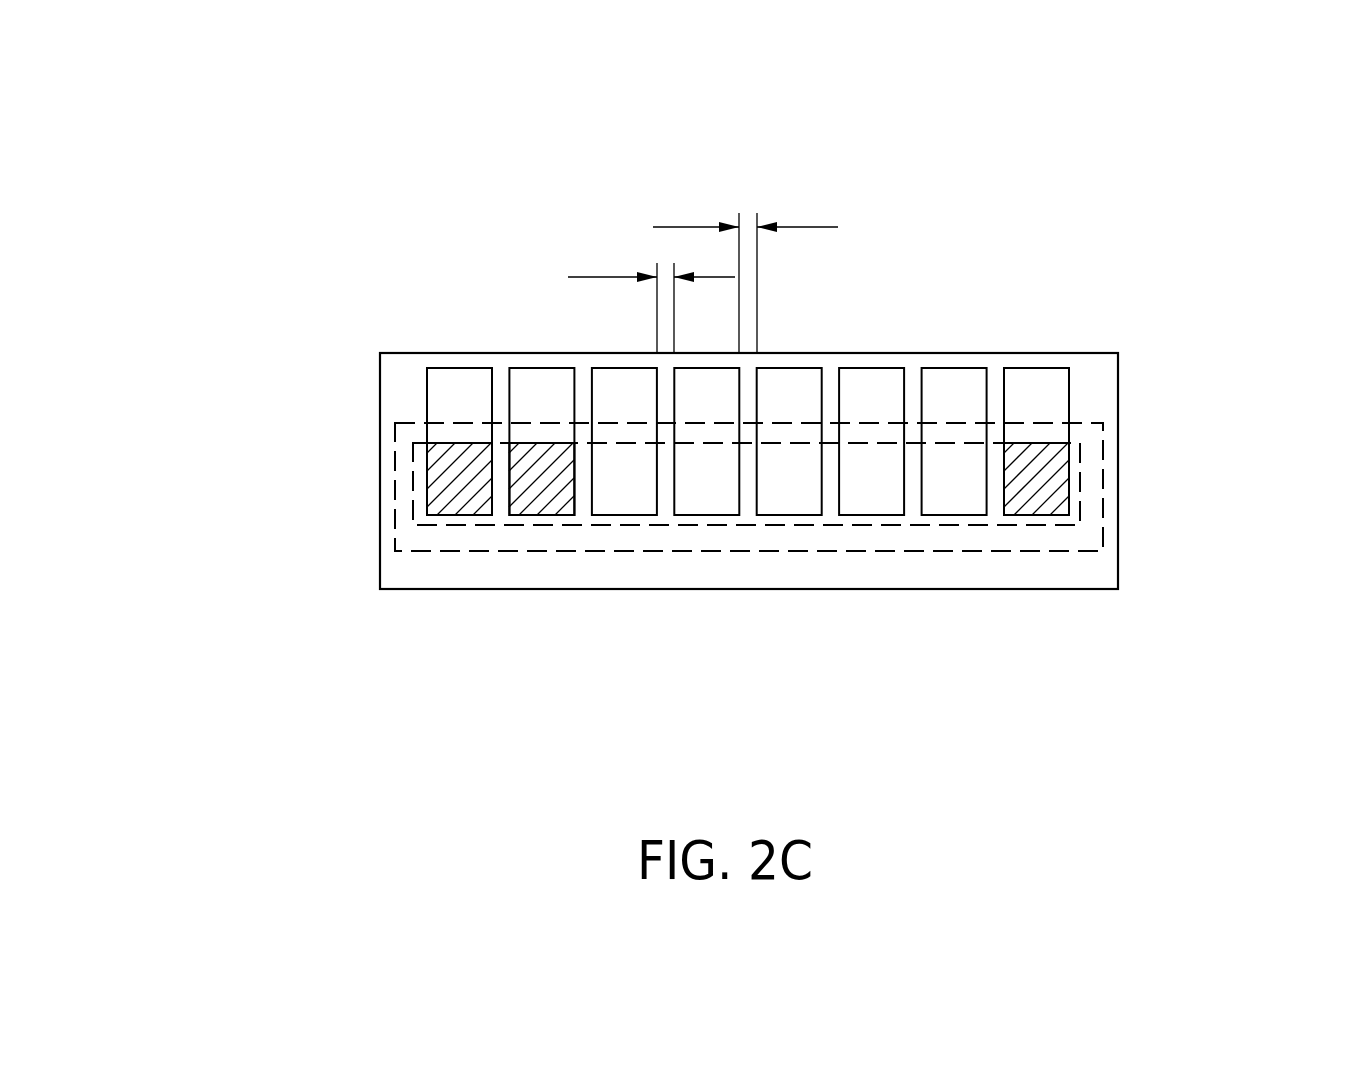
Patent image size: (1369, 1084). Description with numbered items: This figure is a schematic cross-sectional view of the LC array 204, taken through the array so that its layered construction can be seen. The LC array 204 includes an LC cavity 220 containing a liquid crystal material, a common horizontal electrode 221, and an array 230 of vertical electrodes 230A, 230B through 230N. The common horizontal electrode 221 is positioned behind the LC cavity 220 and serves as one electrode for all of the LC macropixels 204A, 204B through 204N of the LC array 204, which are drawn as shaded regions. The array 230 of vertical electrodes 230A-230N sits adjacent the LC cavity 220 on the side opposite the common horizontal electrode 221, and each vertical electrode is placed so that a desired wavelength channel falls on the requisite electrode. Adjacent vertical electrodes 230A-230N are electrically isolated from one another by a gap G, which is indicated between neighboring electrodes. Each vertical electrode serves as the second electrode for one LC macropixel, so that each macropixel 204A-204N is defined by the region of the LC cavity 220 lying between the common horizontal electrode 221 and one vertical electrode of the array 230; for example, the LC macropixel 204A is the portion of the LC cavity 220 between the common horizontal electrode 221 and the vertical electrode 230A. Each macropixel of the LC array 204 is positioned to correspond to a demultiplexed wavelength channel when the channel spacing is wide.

The LC array 204 is at (229, 353).
The LC macropixel 204A is at (467, 497).
The LC macropixel 204B is at (527, 498).
The LC macropixel 204N is at (1027, 503).
The LC cavity 220 is at (395, 462).
The common horizontal electrode 221 is at (413, 516).
The array of vertical electrodes 230 is at (1162, 462).
The vertical electrode 230A is at (427, 373).
The vertical electrode 230B is at (540, 370).
The vertical electrode 230N is at (1033, 368).
The gap G is at (600, 277).